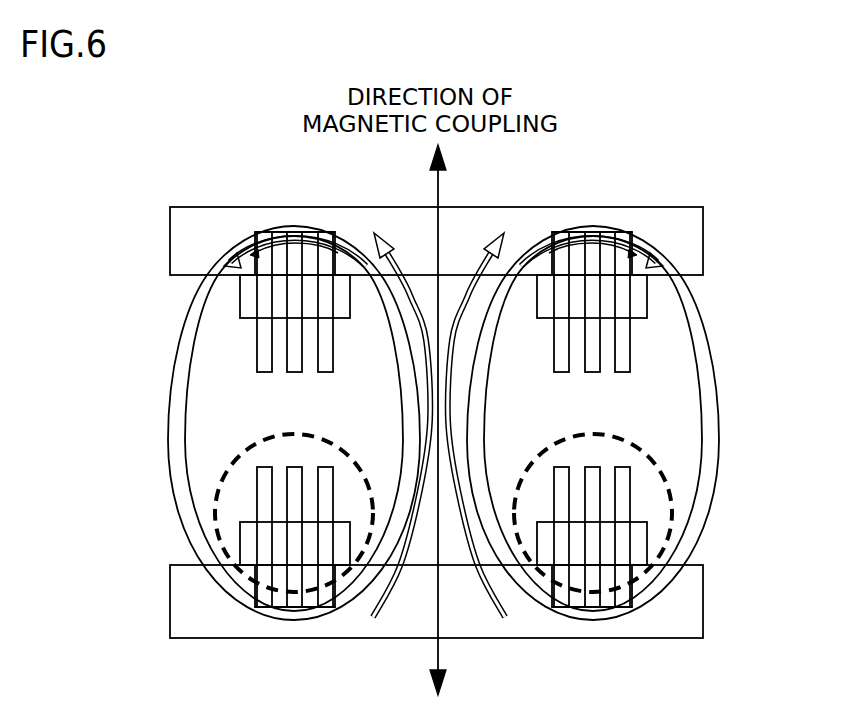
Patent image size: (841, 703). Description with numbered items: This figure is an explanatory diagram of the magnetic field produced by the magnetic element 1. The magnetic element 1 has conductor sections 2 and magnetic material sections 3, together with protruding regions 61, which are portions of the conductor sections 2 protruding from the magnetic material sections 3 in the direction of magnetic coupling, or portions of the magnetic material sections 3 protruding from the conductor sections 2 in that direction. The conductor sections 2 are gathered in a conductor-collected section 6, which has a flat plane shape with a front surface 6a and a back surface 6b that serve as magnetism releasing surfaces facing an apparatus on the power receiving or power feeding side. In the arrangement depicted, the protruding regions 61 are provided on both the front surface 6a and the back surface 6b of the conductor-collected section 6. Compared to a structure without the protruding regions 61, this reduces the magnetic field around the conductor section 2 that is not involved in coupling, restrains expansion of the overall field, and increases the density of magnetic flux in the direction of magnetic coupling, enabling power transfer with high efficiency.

The magnetic element 1 is at (716, 257).
The conductor section 2 is at (250, 300).
The magnetic material section 3 is at (260, 328).
The conductor-collected section 6 is at (347, 419).
The front surface 6a is at (241, 419).
The back surface 6b is at (290, 224).
The protruding region 61 is at (264, 238).